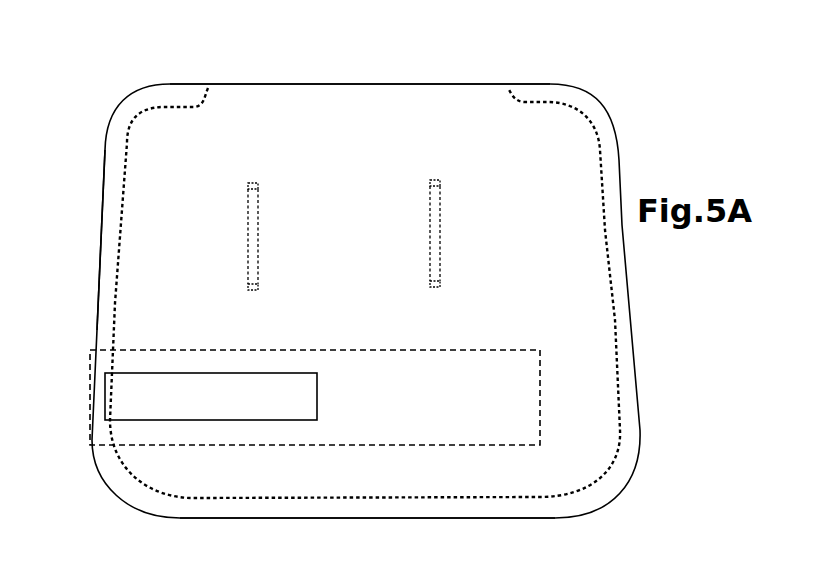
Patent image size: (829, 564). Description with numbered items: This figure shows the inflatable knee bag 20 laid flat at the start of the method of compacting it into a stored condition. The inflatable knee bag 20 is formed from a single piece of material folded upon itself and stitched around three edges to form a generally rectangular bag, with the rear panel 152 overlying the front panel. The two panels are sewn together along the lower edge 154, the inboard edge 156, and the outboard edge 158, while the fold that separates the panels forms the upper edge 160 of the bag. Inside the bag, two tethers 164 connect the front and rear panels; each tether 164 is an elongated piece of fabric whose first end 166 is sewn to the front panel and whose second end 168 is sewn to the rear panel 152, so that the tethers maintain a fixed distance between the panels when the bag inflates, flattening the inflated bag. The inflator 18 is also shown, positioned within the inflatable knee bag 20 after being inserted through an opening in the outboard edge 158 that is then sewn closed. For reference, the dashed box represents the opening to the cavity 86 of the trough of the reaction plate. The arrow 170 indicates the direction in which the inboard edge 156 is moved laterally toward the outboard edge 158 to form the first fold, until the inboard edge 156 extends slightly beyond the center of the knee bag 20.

The inflator 18 is at (193, 414).
The inflatable knee bag 20 is at (481, 126).
The cavity 86 is at (488, 401).
The rear panel 152 is at (528, 241).
The lower edge 154 is at (266, 518).
The inboard edge 156 is at (633, 308).
The outboard edge 158 is at (102, 190).
The upper edge 160 is at (327, 85).
The tether 164 is at (263, 242).
The first end 166 is at (250, 183).
The second end 168 is at (250, 290).
The arrow 170 is at (692, 68).